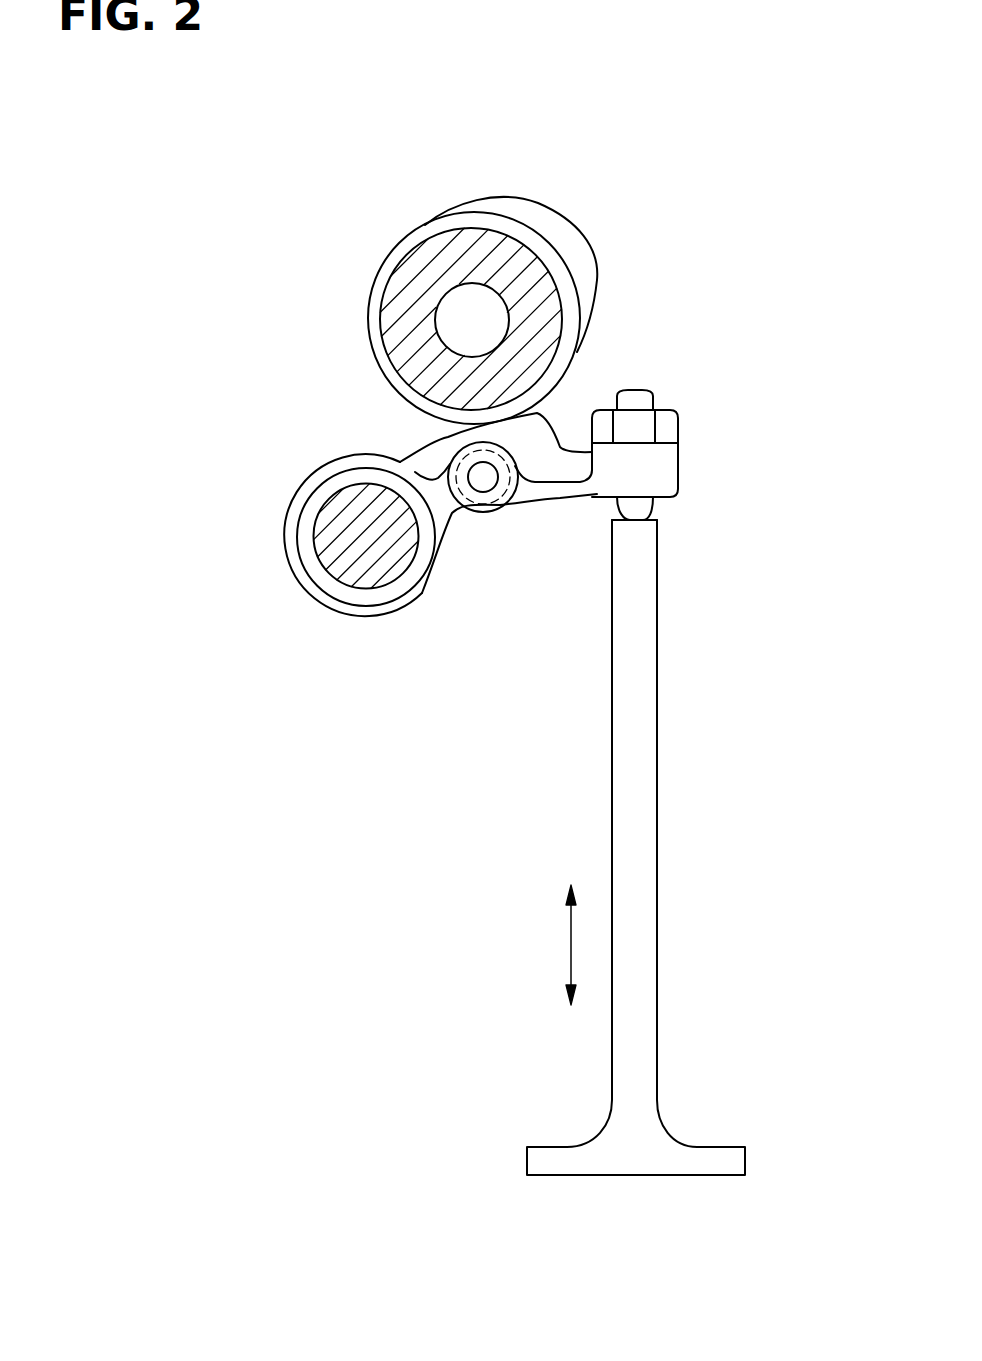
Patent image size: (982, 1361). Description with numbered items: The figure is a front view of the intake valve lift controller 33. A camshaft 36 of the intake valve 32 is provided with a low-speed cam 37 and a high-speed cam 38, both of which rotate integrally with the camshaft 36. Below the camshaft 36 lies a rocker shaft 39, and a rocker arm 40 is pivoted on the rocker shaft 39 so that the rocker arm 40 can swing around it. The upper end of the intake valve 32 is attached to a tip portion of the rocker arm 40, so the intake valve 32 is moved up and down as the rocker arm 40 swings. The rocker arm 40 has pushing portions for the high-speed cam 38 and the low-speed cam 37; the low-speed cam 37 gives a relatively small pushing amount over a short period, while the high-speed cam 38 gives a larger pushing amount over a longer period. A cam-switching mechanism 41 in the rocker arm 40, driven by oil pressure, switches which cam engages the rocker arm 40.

The intake valve 32 is at (633, 1175).
The intake valve lift controller 33 is at (306, 351).
The camshaft 36 is at (410, 250).
The low-speed cam 37 is at (582, 303).
The high-speed cam 38 is at (597, 263).
The rocker shaft 39 is at (325, 500).
The rocker arm 40 is at (555, 500).
The cam-switching mechanism 41 is at (498, 497).